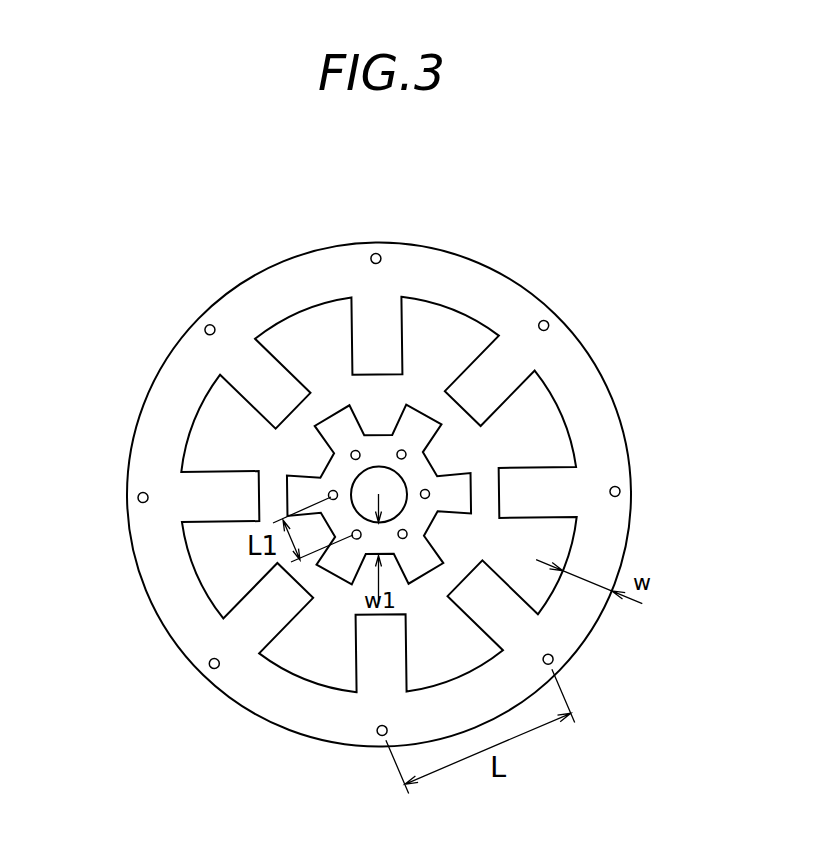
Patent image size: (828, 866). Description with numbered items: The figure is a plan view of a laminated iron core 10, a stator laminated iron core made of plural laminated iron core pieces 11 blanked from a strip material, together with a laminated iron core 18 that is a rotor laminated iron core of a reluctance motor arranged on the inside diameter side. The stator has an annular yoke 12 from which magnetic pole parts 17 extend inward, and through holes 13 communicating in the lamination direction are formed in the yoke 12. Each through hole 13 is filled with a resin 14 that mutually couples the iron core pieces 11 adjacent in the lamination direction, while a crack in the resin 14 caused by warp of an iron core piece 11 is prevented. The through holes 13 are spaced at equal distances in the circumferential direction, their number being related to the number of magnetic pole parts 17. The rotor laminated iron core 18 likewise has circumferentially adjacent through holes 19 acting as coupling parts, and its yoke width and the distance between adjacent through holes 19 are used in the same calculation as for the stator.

The laminated iron core 10 is at (521, 253).
The iron core piece 11 is at (540, 280).
The yoke 12 is at (597, 402).
The through hole 13 is at (140, 497).
The resin 14 is at (549, 322).
The magnetic pole part 17 is at (230, 500).
The laminated iron core 18 is at (329, 392).
The through hole 19 is at (402, 450).